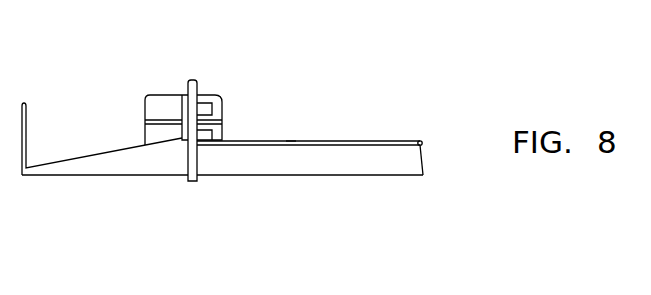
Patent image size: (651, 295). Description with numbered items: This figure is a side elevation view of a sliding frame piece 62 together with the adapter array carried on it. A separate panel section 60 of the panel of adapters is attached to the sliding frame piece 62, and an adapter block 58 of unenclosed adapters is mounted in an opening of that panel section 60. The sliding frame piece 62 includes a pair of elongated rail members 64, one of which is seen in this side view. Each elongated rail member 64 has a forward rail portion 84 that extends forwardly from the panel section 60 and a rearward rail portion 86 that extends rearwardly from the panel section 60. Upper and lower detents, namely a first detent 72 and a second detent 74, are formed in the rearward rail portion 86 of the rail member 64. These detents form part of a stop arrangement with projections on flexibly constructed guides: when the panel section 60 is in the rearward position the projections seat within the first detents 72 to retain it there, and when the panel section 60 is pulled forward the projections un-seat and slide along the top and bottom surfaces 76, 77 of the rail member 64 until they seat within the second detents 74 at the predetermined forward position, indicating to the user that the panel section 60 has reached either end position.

The adapter block 58 is at (159, 108).
The panel section 60 is at (195, 92).
The sliding frame piece 62 is at (241, 156).
The elongated rail member 64 is at (153, 158).
The first detent 72 is at (291, 143).
The second detent 74 is at (421, 142).
The top surface 76 is at (343, 141).
The bottom surface 77 is at (372, 145).
The forward rail portion 84 is at (73, 170).
The rearward rail portion 86 is at (316, 162).